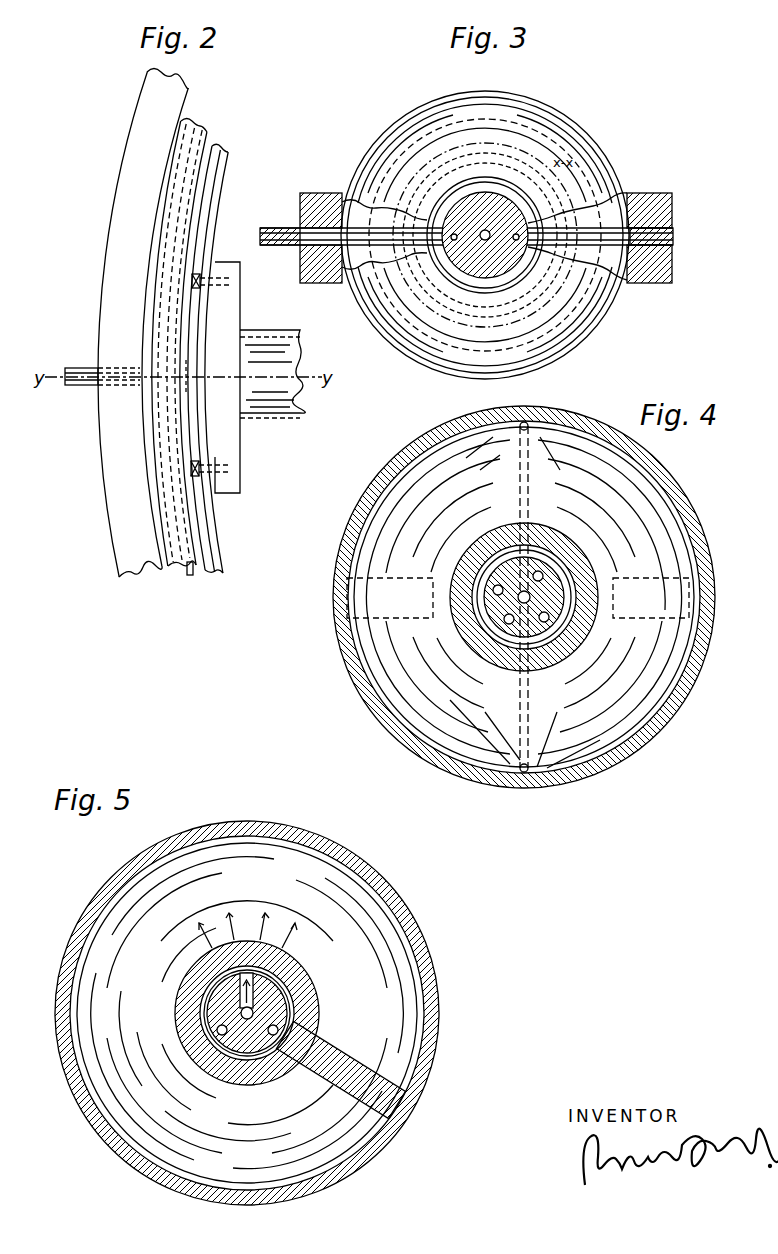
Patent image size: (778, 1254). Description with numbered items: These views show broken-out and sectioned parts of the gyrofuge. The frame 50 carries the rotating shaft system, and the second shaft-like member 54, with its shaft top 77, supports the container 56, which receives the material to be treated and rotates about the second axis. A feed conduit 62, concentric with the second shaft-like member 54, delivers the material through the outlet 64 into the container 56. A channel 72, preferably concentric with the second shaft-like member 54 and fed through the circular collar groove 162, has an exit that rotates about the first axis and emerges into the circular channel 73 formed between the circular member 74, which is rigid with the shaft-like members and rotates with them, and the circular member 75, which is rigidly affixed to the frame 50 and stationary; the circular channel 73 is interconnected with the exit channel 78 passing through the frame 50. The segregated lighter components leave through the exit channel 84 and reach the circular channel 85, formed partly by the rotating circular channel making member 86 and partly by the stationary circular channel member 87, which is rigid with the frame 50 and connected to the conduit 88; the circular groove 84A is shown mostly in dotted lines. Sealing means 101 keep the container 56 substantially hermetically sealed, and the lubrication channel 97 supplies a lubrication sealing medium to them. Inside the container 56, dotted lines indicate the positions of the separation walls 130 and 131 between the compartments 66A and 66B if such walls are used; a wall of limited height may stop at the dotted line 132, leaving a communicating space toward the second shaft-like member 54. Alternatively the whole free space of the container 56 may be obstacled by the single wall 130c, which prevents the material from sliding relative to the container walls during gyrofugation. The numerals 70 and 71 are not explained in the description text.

In FIG. 2, the frame 50 is at (137, 140).
In FIG. 3, the frame 50 is at (315, 200).
In FIG. 2, the circular member 75 is at (188, 127).
In FIG. 2, the circular member 74 is at (219, 152).
In FIG. 2, the shaft top 77 is at (232, 452).
In FIG. 2, the second shaft-like member 54 is at (297, 417).
In FIG. 4, the second shaft-like member 54 is at (548, 572).
In FIG. 5, the second shaft-like member 54 is at (302, 997).
In FIG. 2, the exit channel 78 is at (75, 372).
In FIG. 2, the channel 72 is at (190, 378).
In FIG. 2, the circular channel 73 is at (193, 563).
In FIG. 3, the outlet 64 is at (483, 231).
In FIG. 5, the outlet 64 is at (268, 968).
In FIG. 3, the conduit 88 is at (363, 236).
In FIG. 3, the stationary circular channel member 87 is at (407, 250).
In FIG. 3, the exit channel 84 is at (452, 242).
In FIG. 3, the circular channel 85 is at (538, 255).
In FIG. 3, the rotating circular channel making member 86 is at (524, 253).
In FIG. 3, the circular groove 84A is at (483, 313).
In FIG. 4, the pivot pin 70 is at (528, 422).
In FIG. 4, the compartment 66A is at (645, 478).
In FIG. 4, the compartment 66B is at (620, 645).
In FIG. 4, the container 56 is at (690, 516).
In FIG. 5, the container 56 is at (418, 955).
In FIG. 4, the shaft 71 is at (533, 502).
In FIG. 4, the conduit 62 is at (534, 562).
In FIG. 5, the conduit 62 is at (254, 1013).
In FIG. 4, the circular collar groove 162 is at (568, 575).
In FIG. 4, the dotted line 132 is at (612, 592).
In FIG. 4, the separation wall 131 is at (392, 614).
In FIG. 4, the separation wall 130 is at (664, 600).
In FIG. 4, the sealing means 101 is at (576, 620).
In FIG. 5, the sealing means 101 is at (186, 990).
In FIG. 5, the lubrication channel 97 is at (200, 965).
In FIG. 5, the wall 130c is at (360, 1065).